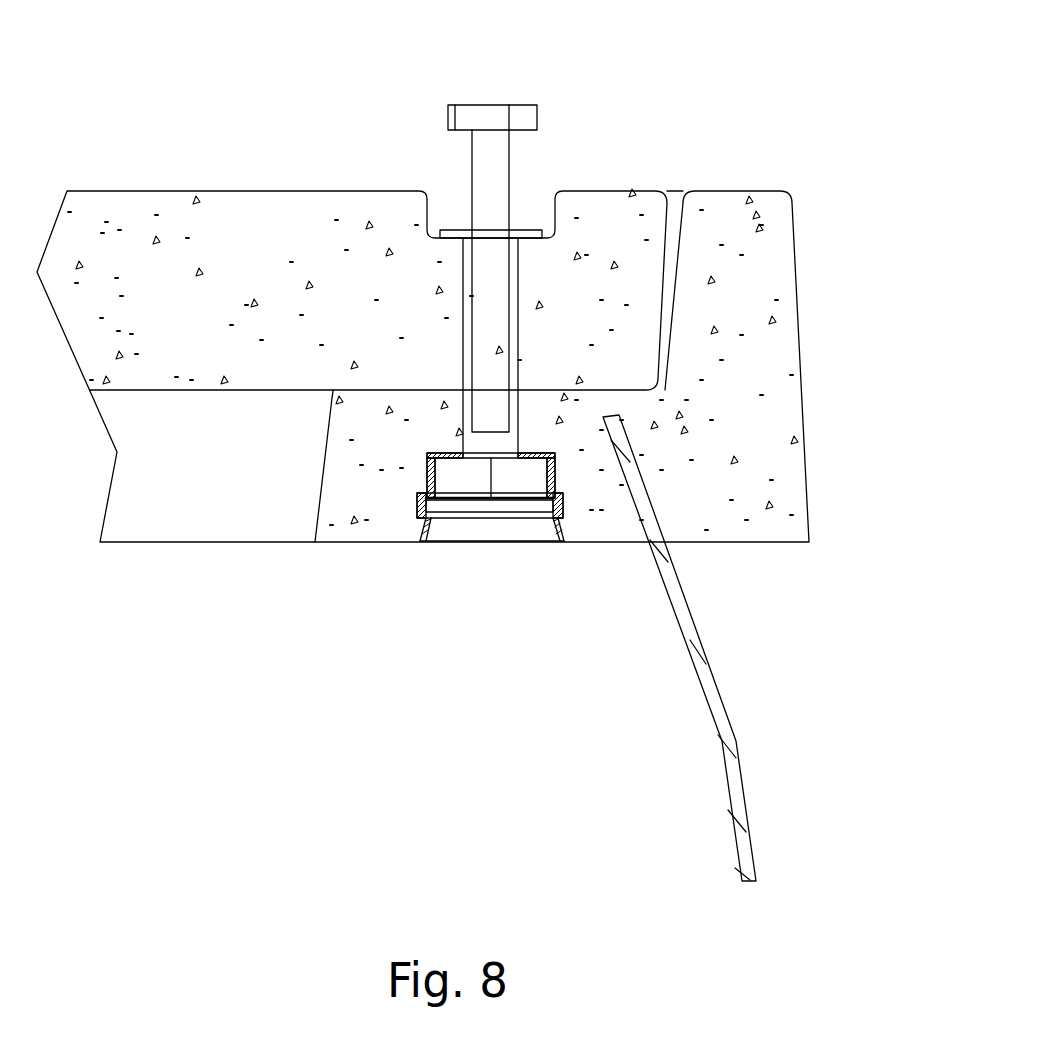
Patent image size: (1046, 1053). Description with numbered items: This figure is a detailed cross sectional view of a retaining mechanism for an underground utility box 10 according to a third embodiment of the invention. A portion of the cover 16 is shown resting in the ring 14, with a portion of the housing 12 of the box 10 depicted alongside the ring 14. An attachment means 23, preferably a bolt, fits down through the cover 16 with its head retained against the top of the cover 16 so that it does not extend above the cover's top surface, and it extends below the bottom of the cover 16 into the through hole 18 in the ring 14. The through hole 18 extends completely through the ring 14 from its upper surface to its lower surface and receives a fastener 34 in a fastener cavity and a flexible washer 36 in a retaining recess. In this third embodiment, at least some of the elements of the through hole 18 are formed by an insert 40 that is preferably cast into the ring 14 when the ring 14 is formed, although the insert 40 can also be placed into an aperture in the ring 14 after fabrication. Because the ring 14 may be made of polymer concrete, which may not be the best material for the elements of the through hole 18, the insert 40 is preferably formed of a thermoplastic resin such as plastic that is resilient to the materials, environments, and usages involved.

The box 10 is at (706, 931).
The housing 12 is at (704, 667).
The ring 14 is at (769, 348).
The cover 16 is at (168, 213).
The through hole 18 is at (483, 556).
The attachment means 23 is at (487, 118).
The fastener 34 is at (507, 477).
The flexible washer 36 is at (527, 505).
The insert 40 is at (420, 534).